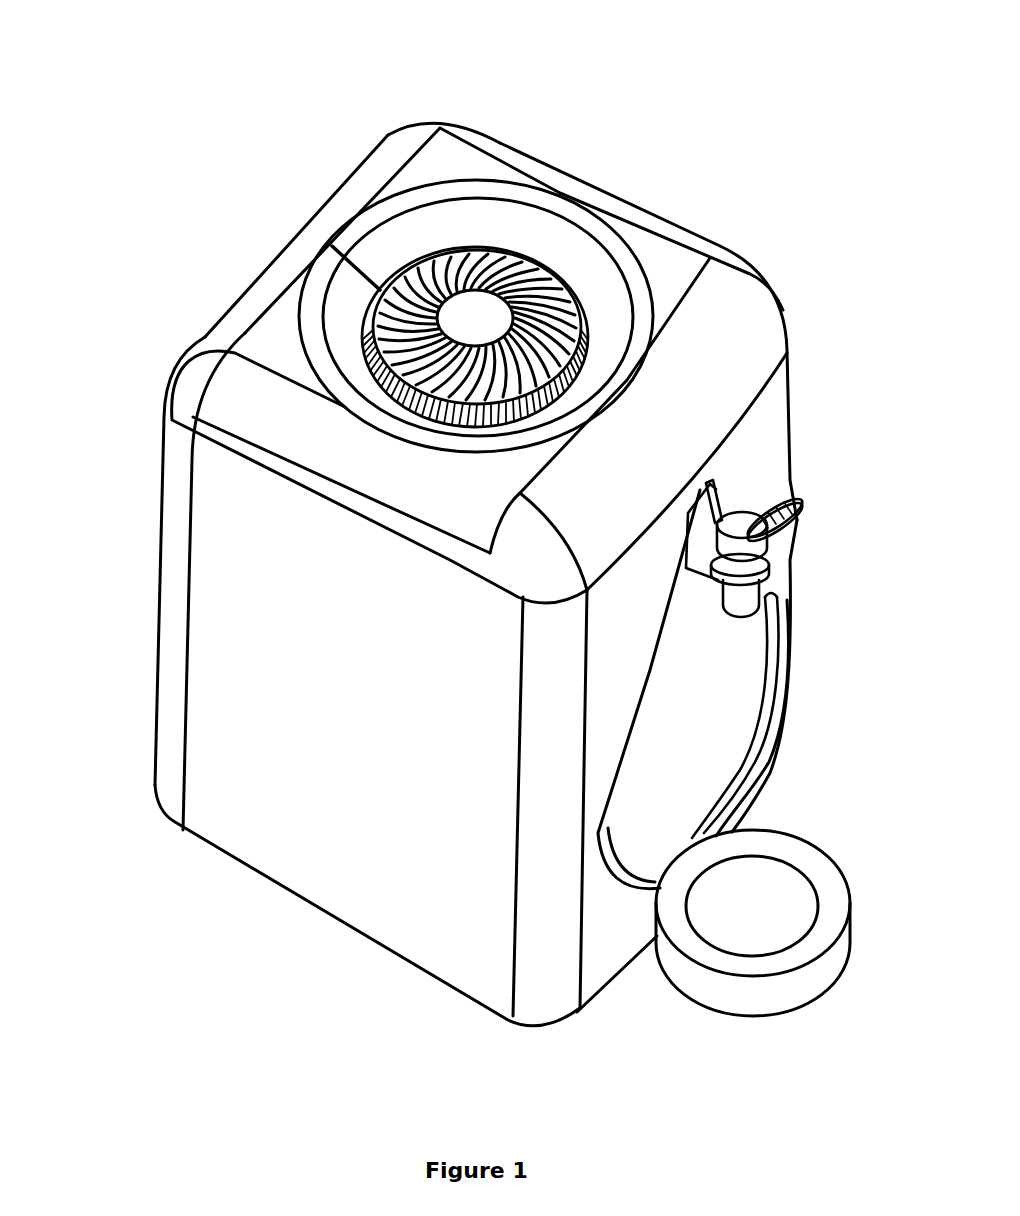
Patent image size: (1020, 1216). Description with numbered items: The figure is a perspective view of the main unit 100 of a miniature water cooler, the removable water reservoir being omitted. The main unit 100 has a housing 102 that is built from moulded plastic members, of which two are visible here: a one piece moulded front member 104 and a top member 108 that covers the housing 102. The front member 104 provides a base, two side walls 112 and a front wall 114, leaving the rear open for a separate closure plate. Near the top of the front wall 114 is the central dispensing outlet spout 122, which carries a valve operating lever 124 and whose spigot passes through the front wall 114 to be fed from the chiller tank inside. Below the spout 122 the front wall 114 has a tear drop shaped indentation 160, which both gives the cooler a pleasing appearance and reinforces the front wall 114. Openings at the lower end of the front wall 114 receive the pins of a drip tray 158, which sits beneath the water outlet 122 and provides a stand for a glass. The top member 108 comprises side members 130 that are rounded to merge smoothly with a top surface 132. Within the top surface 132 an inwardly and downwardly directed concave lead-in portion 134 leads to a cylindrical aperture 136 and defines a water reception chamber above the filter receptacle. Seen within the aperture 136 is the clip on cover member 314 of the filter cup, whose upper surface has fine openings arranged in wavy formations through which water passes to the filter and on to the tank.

The main unit 100 is at (476, 561).
The housing 102 is at (233, 808).
The front member 104 is at (606, 968).
The top member 108 is at (750, 325).
The side walls 112 is at (358, 696).
The front wall 114 is at (668, 652).
The dispensing outlet spout 122 is at (787, 563).
The valve operating lever 124 is at (807, 503).
The side members 130 is at (540, 155).
The top surface 132 is at (680, 268).
The lead-in portion 134 is at (585, 248).
The cylindrical aperture 136 is at (375, 289).
The drip tray 158 is at (810, 860).
The tear drop shaped indentation 160 is at (743, 687).
The cover member 314 is at (455, 253).